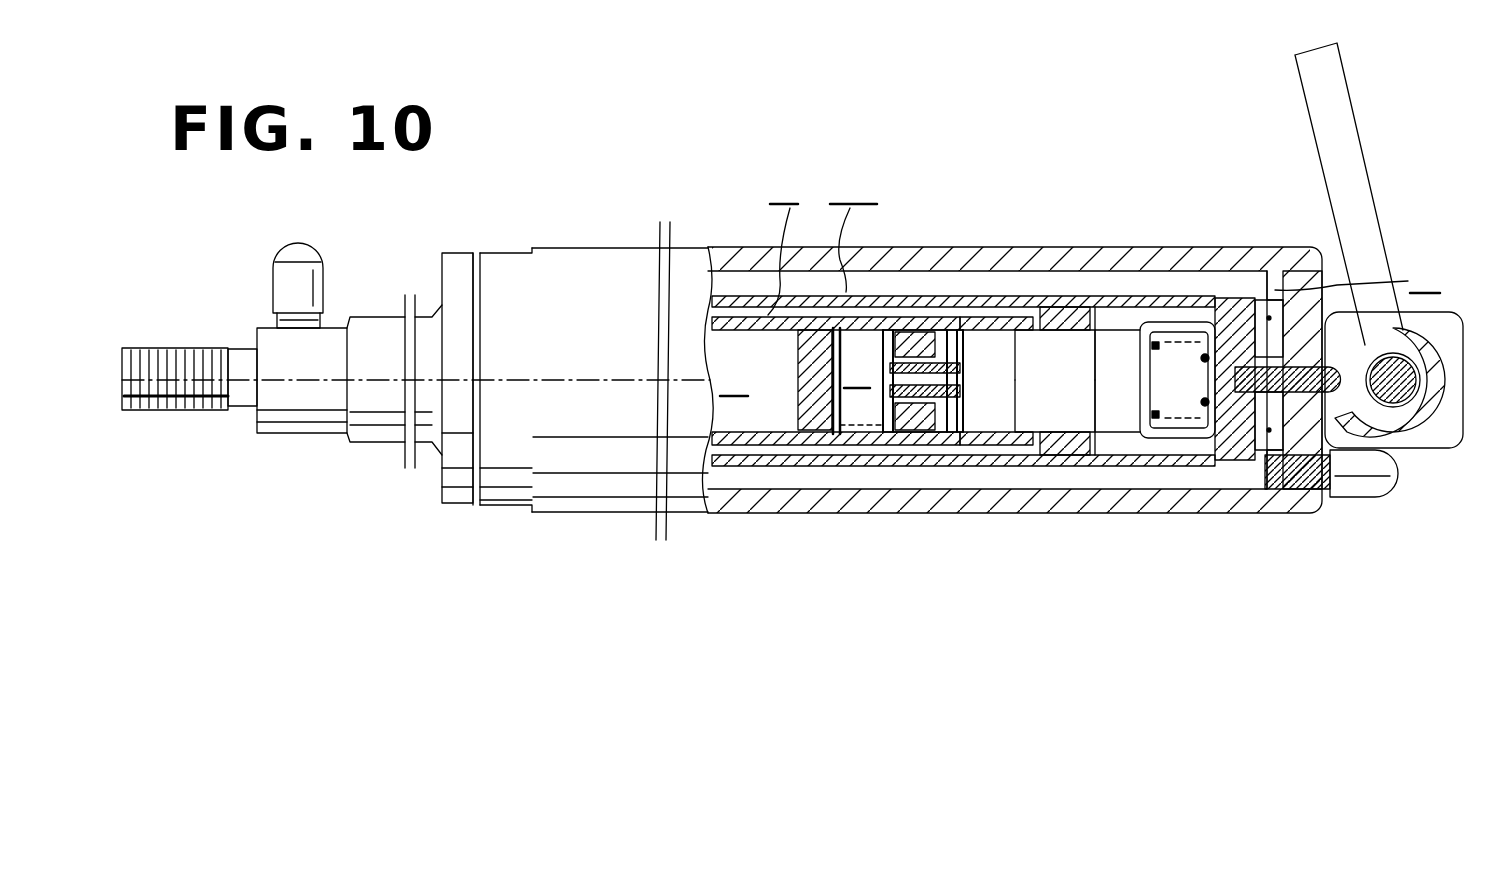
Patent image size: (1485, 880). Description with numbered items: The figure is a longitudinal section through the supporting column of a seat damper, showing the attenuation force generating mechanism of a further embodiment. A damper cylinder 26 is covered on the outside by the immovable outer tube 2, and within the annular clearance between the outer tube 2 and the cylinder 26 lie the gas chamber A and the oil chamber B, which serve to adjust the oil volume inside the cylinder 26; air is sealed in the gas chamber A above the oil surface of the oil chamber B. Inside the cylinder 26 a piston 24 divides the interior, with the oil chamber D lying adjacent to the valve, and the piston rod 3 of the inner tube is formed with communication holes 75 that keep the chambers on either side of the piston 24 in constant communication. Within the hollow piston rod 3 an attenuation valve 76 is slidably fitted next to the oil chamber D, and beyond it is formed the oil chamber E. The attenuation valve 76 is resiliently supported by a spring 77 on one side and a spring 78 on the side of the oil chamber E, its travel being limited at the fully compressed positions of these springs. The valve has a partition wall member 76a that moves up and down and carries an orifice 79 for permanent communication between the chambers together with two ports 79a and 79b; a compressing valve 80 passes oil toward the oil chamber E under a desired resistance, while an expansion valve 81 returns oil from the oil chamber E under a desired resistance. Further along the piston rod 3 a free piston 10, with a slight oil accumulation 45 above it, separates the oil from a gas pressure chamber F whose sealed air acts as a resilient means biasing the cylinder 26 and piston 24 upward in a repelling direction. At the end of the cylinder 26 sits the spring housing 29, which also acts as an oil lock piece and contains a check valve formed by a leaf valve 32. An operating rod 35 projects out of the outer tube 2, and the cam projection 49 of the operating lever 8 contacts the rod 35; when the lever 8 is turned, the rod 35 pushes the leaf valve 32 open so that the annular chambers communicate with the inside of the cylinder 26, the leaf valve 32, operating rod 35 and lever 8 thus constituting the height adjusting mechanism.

The outer tube 2 is at (1020, 495).
The piston rod 3 is at (785, 440).
The operating lever 8 is at (1305, 84).
The free piston 10 is at (757, 490).
The piston 24 is at (1080, 295).
The damper cylinder 26 is at (1040, 295).
The spring housing 29 is at (1150, 440).
The leaf valve 32 is at (1215, 450).
The operating rod 35 is at (1258, 455).
The oil accumulation 45 is at (724, 340).
The cam projection 49 is at (1352, 490).
The communication holes 75 is at (985, 325).
The attenuation valve 76 is at (920, 340).
The partition wall member 76a is at (923, 435).
The spring 77 is at (948, 338).
The spring 78 is at (812, 328).
The orifice 79 is at (883, 417).
The port 79a is at (1015, 395).
The port 79b is at (1015, 345).
The compressing valve 80 is at (905, 330).
The expansion valve 81 is at (985, 465).
The gas chamber A is at (853, 229).
The oil chamber B is at (1369, 351).
The oil chamber D is at (783, 240).
The oil chamber E is at (857, 369).
The gas pressure chamber F is at (734, 379).